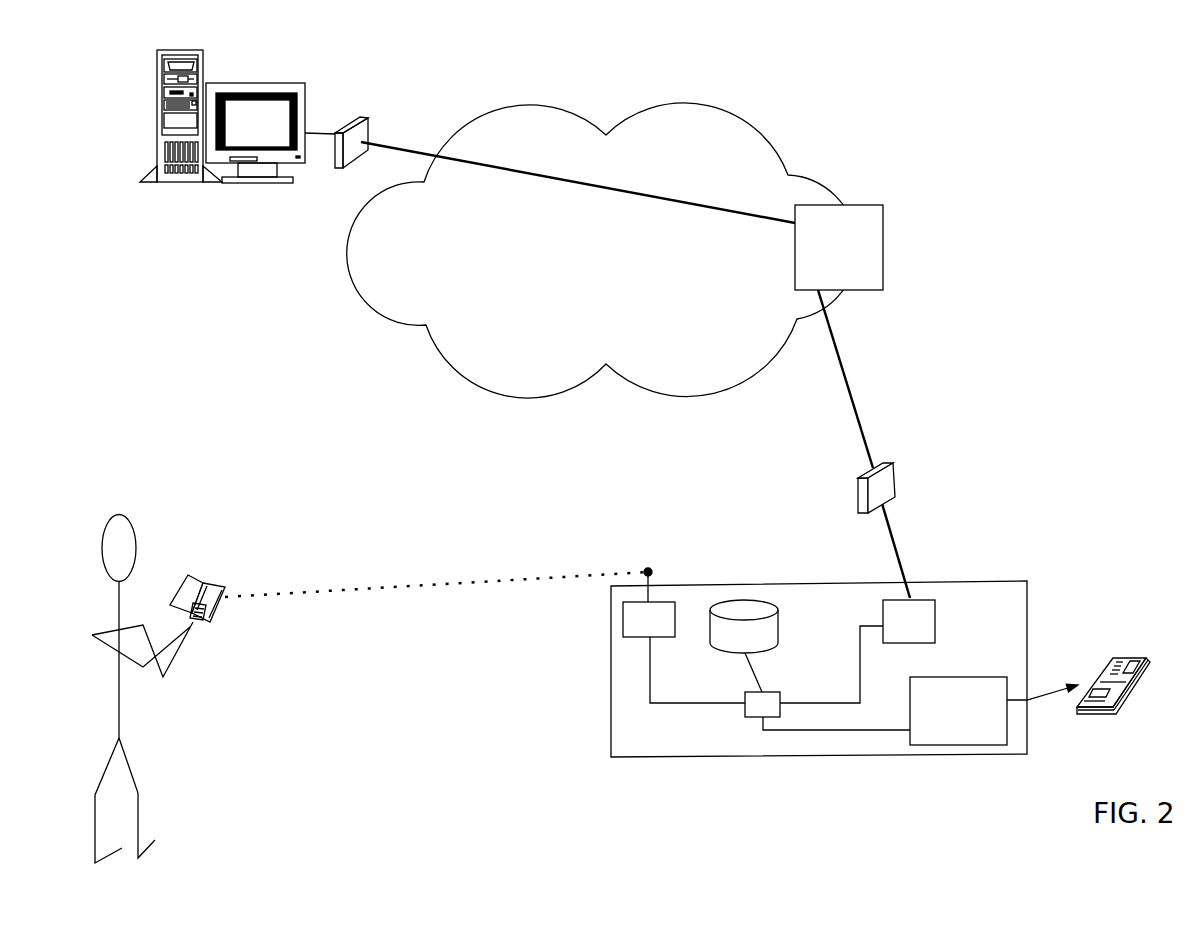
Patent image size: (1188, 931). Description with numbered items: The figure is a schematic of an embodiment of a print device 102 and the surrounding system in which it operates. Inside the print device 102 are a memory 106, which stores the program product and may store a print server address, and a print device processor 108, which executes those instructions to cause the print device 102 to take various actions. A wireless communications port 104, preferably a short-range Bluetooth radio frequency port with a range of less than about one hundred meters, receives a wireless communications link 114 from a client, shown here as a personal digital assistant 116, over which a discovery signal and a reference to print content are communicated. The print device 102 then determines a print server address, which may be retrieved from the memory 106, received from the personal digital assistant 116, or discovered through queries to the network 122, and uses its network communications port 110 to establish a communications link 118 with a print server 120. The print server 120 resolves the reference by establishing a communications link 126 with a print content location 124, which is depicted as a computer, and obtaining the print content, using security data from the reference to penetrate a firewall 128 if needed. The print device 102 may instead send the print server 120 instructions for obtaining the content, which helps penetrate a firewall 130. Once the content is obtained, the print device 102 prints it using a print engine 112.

The print device 102 is at (612, 738).
The wireless communications port 104 is at (677, 601).
The memory 106 is at (762, 602).
The print device processor 108 is at (753, 717).
The network communications port 110 is at (930, 598).
The print engine 112 is at (992, 677).
The wireless communications link 114 is at (397, 588).
The personal digital assistant 116 is at (197, 575).
The communications link 118 is at (860, 445).
The print server 120 is at (883, 246).
The network 122 is at (676, 101).
The print content location 124 is at (293, 83).
The communications link 126 is at (407, 150).
The firewall 128 is at (357, 117).
The firewall 130 is at (887, 463).